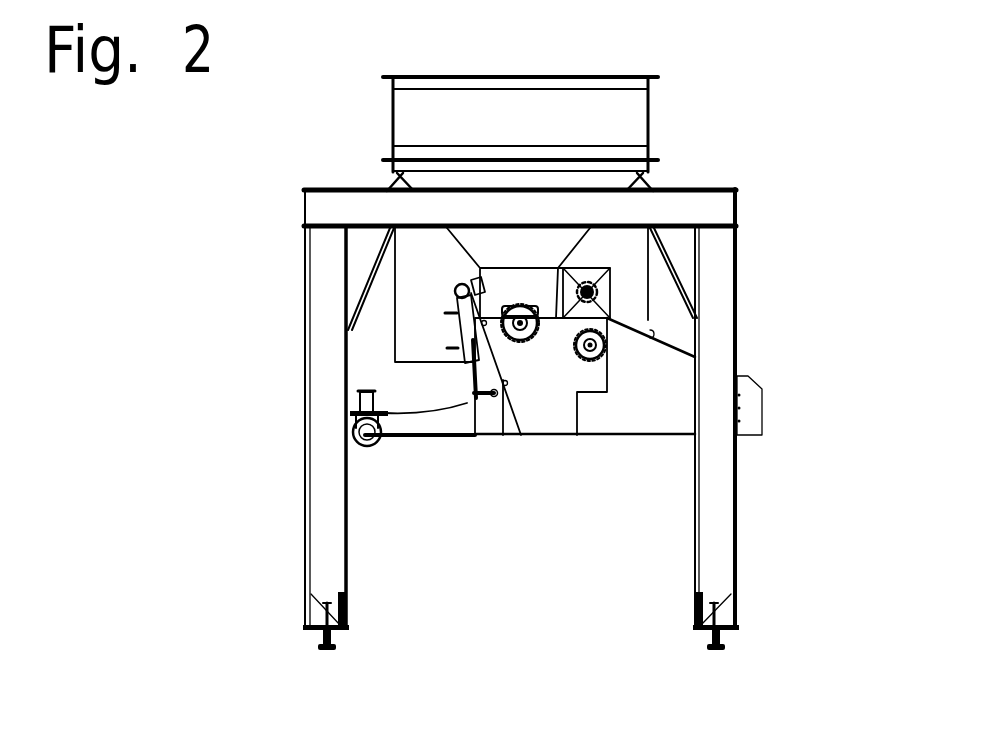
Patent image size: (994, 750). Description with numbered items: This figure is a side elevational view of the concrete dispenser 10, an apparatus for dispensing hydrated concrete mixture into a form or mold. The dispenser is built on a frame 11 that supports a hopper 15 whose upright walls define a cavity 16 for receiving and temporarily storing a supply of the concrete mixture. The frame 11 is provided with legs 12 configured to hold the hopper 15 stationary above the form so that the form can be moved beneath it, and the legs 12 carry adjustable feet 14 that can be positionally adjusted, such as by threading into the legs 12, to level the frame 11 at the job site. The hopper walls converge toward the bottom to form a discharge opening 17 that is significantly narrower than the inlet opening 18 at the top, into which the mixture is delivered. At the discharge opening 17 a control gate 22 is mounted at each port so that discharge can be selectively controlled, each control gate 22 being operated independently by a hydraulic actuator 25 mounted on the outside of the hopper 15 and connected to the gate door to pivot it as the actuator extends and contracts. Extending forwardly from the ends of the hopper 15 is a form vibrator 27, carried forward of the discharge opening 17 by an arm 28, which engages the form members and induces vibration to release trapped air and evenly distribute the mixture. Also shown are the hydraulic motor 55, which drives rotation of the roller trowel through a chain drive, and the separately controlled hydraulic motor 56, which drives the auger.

The concrete dispenser 10 is at (232, 211).
The frame 11 is at (701, 188).
The legs 12 is at (335, 561).
The adjustable feet 14 is at (320, 636).
The hopper 15 is at (648, 103).
The cavity 16 is at (479, 60).
The discharge opening 17 is at (547, 456).
The inlet opening 18 is at (544, 60).
The control gate 22 is at (425, 378).
The hydraulic actuator 25 is at (455, 325).
The form vibrator 27 is at (350, 424).
The arm 28 is at (435, 423).
The hydraulic motor 55 is at (602, 350).
The hydraulic motor 56 is at (596, 292).